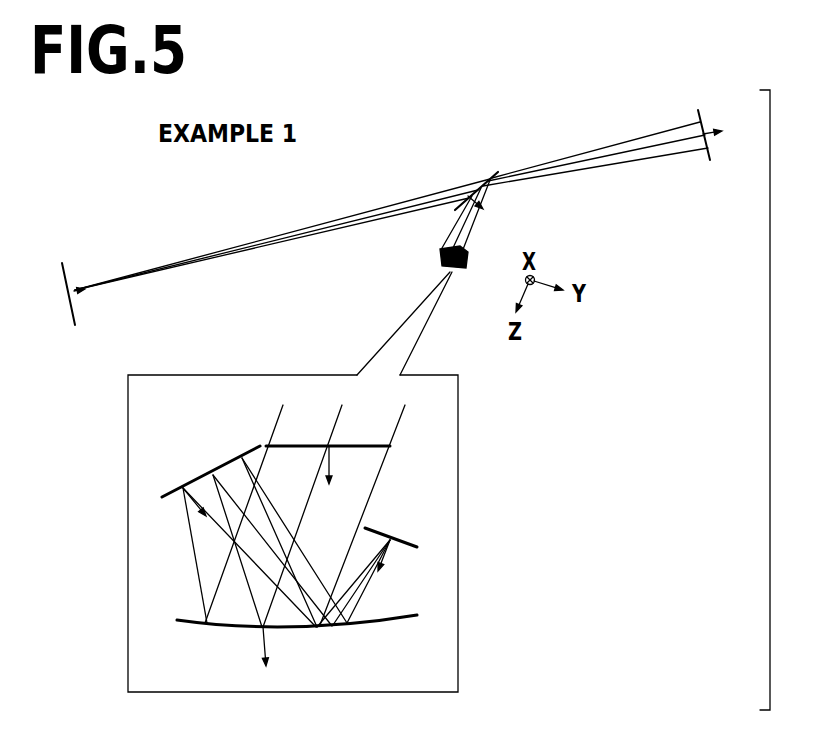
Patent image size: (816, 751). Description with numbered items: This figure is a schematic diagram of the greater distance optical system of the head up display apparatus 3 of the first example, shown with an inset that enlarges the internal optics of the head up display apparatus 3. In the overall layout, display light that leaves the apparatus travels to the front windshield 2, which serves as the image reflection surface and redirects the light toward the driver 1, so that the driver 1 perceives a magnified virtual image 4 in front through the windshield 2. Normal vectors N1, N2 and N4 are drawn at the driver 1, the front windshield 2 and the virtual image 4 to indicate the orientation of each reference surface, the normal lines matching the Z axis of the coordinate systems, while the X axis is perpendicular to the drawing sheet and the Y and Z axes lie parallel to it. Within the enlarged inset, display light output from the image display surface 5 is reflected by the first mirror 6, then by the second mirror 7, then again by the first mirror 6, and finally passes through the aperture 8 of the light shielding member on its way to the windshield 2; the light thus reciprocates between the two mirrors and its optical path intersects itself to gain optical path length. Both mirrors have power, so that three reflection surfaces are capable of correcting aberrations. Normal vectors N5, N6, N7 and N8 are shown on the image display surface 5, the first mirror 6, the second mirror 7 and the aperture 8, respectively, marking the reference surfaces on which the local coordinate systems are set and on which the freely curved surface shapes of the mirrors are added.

The driver 1 is at (708, 160).
The front windshield 2 is at (496, 172).
The head up display apparatus 3 is at (426, 259).
The virtual image 4 is at (72, 318).
The image display surface 5 is at (405, 538).
The first mirror 6 is at (195, 625).
The second mirror 7 is at (175, 491).
The aperture 8 is at (268, 444).
The normal vector of element 1 N1 is at (719, 120).
The normal vector of mirror 2 N2 is at (494, 210).
The normal vector of element 4 N4 is at (94, 303).
The normal vector of mirror 5 N5 is at (398, 566).
The normal vector of mirror 6 N6 is at (250, 646).
The normal vector of mirror 7 N7 is at (204, 515).
The normal vector of mirror 8 N8 is at (346, 469).